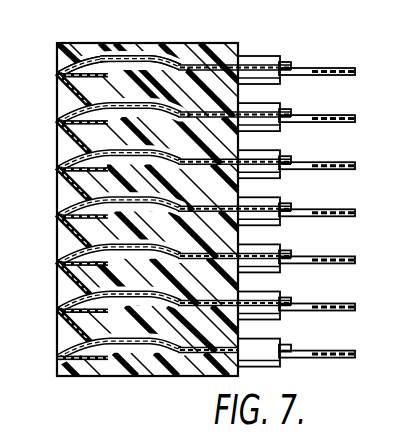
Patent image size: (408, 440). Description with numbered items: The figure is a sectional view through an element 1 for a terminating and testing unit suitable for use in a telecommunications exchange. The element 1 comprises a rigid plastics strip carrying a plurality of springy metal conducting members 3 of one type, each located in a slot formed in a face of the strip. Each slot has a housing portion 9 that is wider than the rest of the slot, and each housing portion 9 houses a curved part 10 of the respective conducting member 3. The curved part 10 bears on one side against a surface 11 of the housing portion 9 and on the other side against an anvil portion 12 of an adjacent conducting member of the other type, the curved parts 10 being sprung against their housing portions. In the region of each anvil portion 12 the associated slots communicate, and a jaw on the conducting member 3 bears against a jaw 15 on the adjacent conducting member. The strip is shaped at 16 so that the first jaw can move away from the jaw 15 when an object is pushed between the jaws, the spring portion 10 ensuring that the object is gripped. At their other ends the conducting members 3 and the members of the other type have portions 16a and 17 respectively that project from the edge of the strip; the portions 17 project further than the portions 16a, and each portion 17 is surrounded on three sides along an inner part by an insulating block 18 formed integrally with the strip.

The element 1 is at (212, 46).
The conducting member 3 is at (209, 54).
The housing portion 9 is at (125, 55).
The curved part 10 is at (151, 56).
The surface 11 is at (146, 353).
The anvil portion 12 is at (78, 53).
The jaw 15 is at (61, 75).
The shaped region of strip 16 is at (60, 90).
The projecting portion 16a is at (292, 62).
The projecting portion 17 is at (349, 68).
The insulating block 18 is at (265, 57).